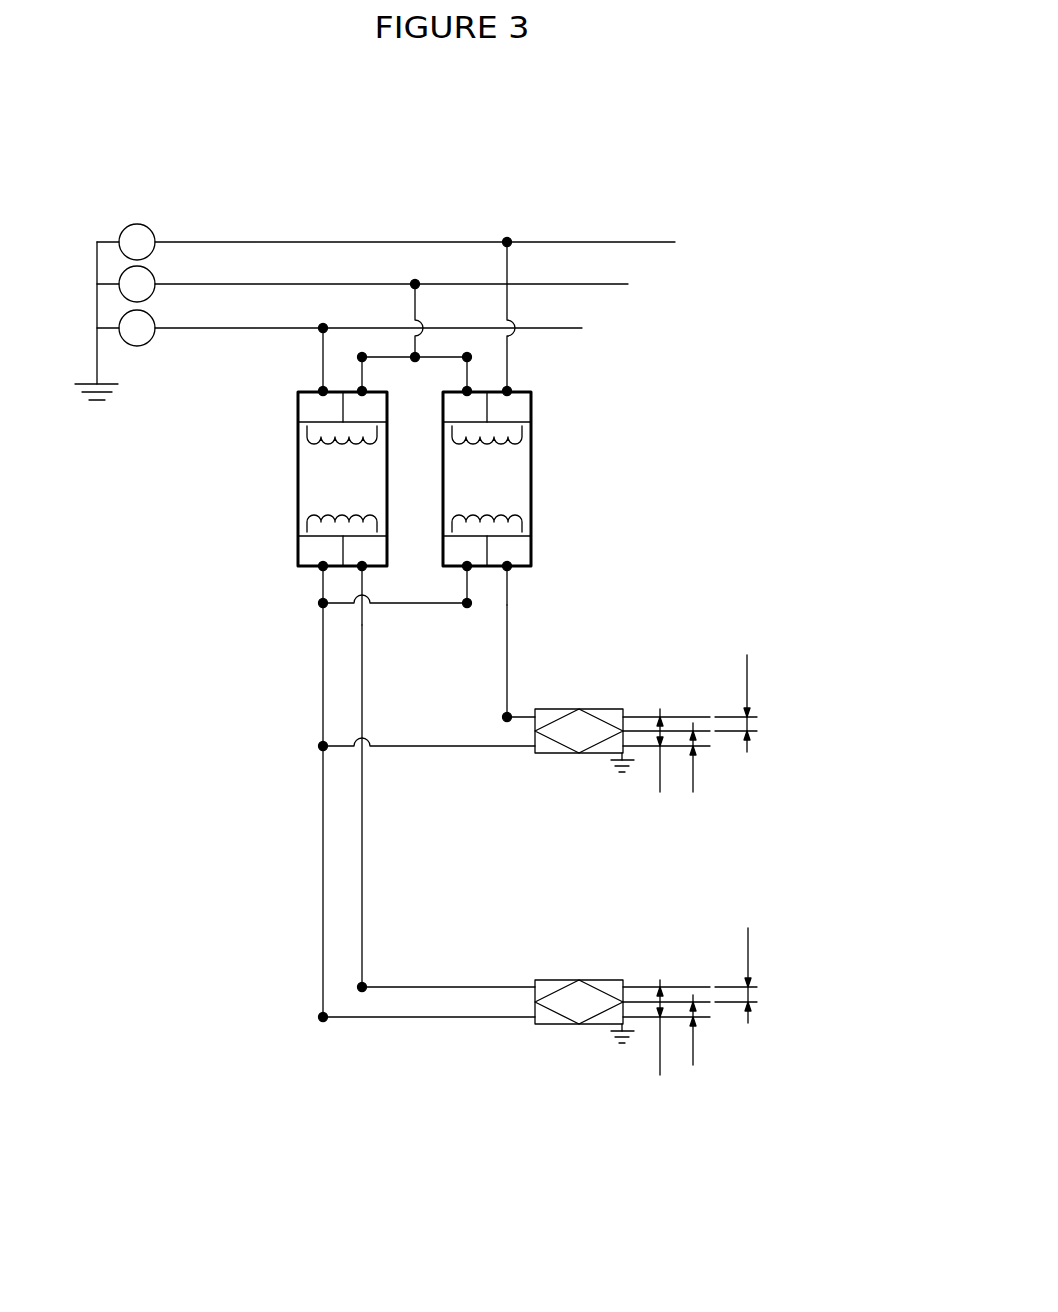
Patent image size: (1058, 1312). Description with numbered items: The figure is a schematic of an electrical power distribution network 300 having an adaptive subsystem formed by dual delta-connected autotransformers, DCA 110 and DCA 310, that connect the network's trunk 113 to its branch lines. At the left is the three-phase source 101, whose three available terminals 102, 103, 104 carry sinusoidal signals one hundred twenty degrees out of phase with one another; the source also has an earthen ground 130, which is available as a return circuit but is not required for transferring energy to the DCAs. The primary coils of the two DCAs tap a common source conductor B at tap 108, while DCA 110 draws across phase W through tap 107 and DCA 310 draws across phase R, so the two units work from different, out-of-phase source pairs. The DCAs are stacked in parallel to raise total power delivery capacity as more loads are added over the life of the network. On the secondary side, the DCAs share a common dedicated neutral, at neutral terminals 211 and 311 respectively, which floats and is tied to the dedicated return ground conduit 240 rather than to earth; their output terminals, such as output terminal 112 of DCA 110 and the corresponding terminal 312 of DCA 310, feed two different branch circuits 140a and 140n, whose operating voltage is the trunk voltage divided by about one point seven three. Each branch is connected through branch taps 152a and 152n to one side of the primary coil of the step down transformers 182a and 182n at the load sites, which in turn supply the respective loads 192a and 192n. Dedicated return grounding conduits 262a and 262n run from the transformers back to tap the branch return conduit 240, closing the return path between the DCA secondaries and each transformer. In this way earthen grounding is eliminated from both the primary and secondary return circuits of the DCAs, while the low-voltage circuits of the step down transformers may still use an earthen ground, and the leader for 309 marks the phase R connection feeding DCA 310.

The source 101 is at (77, 242).
The source terminal 104 is at (163, 232).
The source terminal 103 is at (163, 275).
The source terminal 102 is at (163, 318).
The trunk 113 is at (615, 222).
The tap 108 is at (418, 272).
The phase R connection 309 is at (510, 232).
The tap 107 is at (318, 337).
The earthen ground 130 is at (93, 410).
The electrical power distribution network 300 is at (713, 305).
The DCA 110 is at (313, 500).
The DCA 310 is at (523, 490).
The neutral terminal 211 is at (315, 577).
The output terminal 112 is at (360, 578).
The neutral terminal 311 is at (457, 572).
The output terminal a of DCA2 312 is at (513, 572).
The branch circuit 140a is at (513, 630).
The branch circuit 140n is at (358, 677).
The dedicated conduit 240 is at (310, 838).
The dedicated return grounding conduit 262a is at (408, 758).
The dedicated return grounding conduit 262n is at (431, 1025).
The branch tap 152a is at (507, 723).
The branch tap 152n is at (370, 980).
The step down transformer 182a is at (582, 765).
The step down transformer 182n is at (577, 1035).
The load 192a is at (778, 707).
The load 192n is at (790, 980).